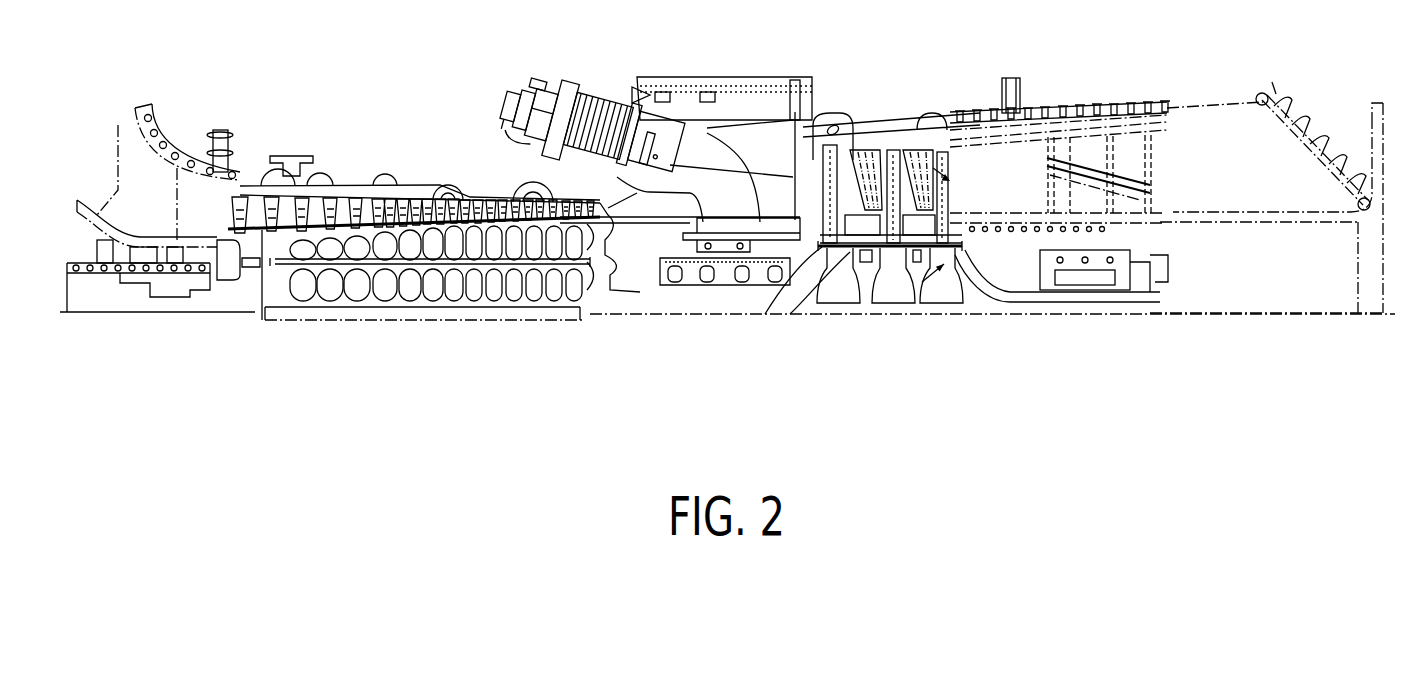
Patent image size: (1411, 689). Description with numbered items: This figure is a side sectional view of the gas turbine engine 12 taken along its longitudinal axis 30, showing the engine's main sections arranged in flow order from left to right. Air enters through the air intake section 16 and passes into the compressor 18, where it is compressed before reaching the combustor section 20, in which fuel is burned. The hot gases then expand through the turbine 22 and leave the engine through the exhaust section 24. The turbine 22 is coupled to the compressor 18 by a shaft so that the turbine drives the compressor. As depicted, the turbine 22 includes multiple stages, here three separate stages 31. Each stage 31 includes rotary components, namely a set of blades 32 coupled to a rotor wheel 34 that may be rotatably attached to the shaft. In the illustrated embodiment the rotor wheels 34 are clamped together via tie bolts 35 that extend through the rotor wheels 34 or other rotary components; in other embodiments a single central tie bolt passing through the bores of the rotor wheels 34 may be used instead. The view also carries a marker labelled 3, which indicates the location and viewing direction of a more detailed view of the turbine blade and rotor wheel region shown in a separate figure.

The gas turbine engine 12 is at (633, 346).
The air intake section 16 is at (133, 207).
The compressor 18 is at (537, 175).
The combustor section 20 is at (773, 106).
The turbine 22 is at (865, 202).
The exhaust section 24 is at (1157, 191).
The longitudinal axis 30 is at (1300, 316).
The stage 31 is at (862, 360).
The blades 32 is at (900, 200).
The rotor wheel 34 is at (958, 300).
The tie bolts 35 is at (788, 300).
The view direction of FIG. 3 is at (946, 235).